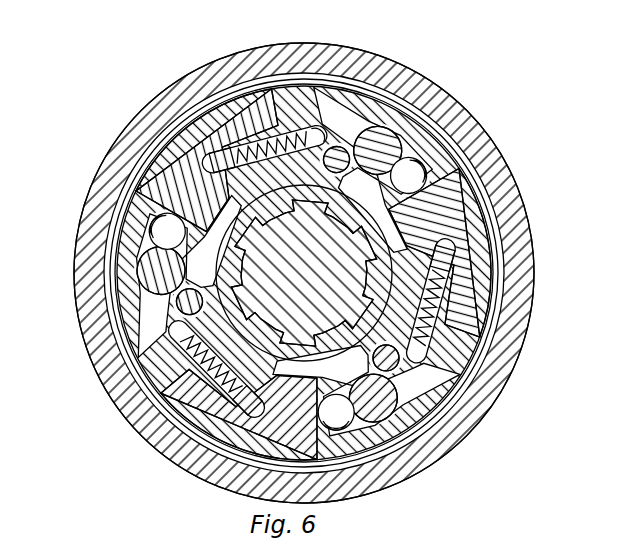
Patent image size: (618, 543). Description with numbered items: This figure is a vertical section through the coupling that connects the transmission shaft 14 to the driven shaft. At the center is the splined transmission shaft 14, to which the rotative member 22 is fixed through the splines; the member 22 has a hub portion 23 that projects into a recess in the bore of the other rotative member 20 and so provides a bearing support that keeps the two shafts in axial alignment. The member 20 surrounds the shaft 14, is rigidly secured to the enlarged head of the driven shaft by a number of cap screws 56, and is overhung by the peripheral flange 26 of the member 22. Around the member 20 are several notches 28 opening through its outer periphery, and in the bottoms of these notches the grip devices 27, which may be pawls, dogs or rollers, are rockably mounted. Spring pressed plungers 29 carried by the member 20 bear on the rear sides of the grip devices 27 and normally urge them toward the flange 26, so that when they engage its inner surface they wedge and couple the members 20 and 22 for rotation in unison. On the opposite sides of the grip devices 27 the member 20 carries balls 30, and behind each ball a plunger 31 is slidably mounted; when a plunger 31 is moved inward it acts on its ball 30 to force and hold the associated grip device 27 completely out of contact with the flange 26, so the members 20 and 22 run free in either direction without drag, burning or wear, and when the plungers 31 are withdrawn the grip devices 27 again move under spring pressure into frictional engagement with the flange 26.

The transmission shaft 14 is at (303, 273).
The rotative member 20 is at (472, 333).
The rotative member 22 is at (537, 243).
The hub portion 23 is at (335, 143).
The peripheral flange 26 is at (524, 280).
The grip devices 27 is at (152, 163).
The notches 28 is at (135, 205).
The spring pressed plungers 29 is at (440, 297).
The balls 30 is at (418, 165).
The plunger 31 is at (368, 130).
The cap screws 56 is at (390, 60).